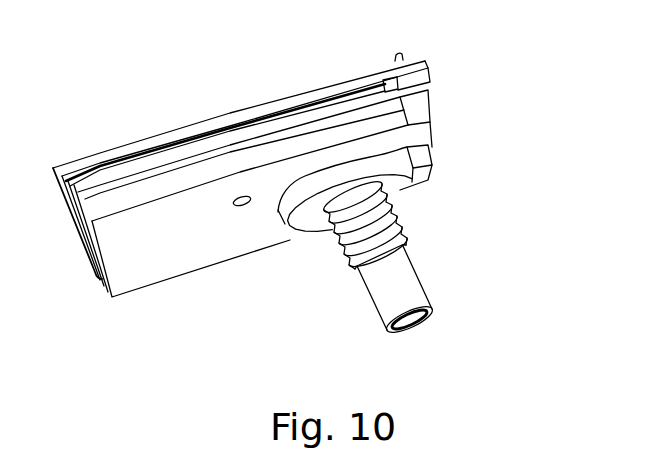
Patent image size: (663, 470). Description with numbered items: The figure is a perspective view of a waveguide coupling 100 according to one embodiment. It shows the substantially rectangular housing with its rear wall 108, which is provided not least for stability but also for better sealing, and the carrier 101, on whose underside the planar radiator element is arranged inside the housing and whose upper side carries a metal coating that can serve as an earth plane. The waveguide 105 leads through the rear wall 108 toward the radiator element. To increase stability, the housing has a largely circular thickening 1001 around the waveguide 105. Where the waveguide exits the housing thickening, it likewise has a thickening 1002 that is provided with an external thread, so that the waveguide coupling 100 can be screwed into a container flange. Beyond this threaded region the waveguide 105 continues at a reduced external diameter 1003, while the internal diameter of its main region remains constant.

The waveguide coupling 100 is at (471, 83).
The carrier 101 is at (222, 118).
The rear wall 108 is at (163, 257).
The thickening 1001 is at (308, 227).
The thickening of the waveguide 1002 is at (398, 214).
The reduced external diameter 1003 is at (407, 260).
The waveguide 105 is at (410, 296).